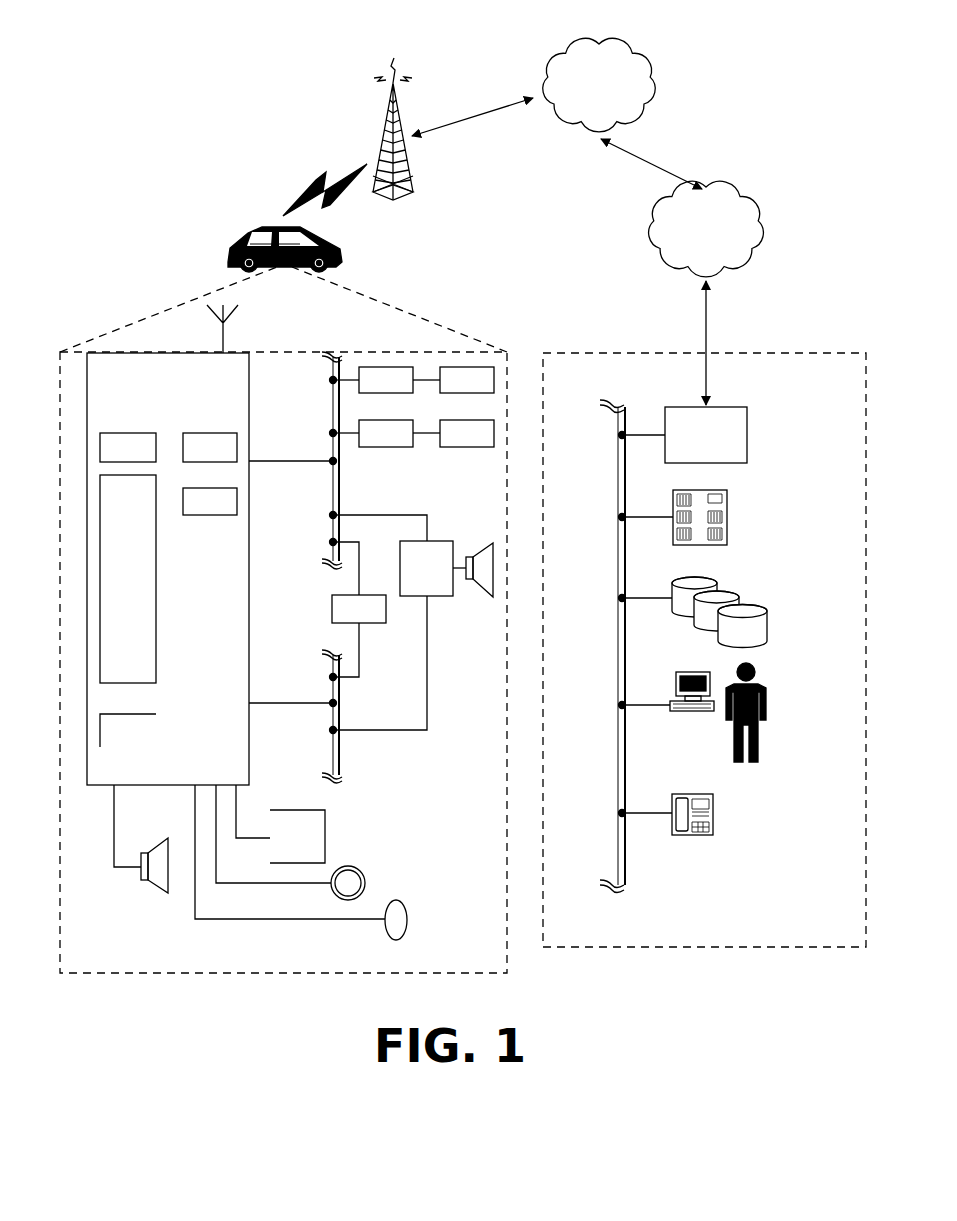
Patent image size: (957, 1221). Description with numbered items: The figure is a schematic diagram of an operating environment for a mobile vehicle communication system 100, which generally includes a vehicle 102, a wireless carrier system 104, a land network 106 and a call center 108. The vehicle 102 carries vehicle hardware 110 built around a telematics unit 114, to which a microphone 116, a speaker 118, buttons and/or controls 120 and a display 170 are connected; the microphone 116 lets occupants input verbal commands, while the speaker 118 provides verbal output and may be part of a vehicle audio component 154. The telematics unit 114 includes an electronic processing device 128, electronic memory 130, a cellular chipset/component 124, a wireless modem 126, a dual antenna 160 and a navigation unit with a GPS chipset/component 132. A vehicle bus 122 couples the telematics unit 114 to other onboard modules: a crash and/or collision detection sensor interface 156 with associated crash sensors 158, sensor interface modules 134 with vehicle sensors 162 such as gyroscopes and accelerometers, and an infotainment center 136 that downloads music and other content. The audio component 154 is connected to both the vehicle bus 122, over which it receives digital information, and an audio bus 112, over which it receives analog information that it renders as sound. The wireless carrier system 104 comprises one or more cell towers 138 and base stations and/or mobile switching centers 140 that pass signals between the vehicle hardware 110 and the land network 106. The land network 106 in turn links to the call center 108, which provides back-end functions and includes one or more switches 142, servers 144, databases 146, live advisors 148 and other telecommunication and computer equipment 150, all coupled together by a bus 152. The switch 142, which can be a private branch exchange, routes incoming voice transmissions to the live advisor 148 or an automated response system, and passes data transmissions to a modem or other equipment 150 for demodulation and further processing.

The communication system 100 is at (410, 28).
The vehicle 102 is at (233, 242).
The wireless carrier system 104 is at (511, 194).
The land network 106 is at (706, 229).
The call center 108 is at (703, 950).
The vehicle hardware 110 is at (250, 975).
The audio bus 112 is at (331, 752).
The telematics unit 114 is at (252, 645).
The microphone 116 is at (400, 900).
The speaker 118 is at (150, 891).
The buttons and/or controls 120 is at (345, 866).
The vehicle bus 122 is at (340, 503).
The cellular chipset/component 124 is at (128, 447).
The wireless modem 126 is at (210, 447).
The electronic processing device 128 is at (128, 579).
The electronic memory 130 is at (128, 730).
The GPS chipset/component 132 is at (210, 501).
The sensor interface modules 134 is at (373, 433).
The infotainment center 136 is at (359, 609).
The cell towers 138 is at (402, 112).
The mobile switching centers 140 is at (599, 84).
The switch 142 is at (684, 435).
The servers 144 is at (727, 508).
The databases 146 is at (766, 612).
The live advisor 148 is at (760, 684).
The telecommunication and computer equipment 150 is at (713, 805).
The bus 152 is at (617, 645).
The audio component 154 is at (413, 622).
The crash and/or collision detection sensor interface 156 is at (373, 380).
The crash sensors 158 is at (453, 380).
The dual antenna 160 is at (226, 349).
The vehicle sensors 162 is at (453, 433).
The display 170 is at (280, 824).